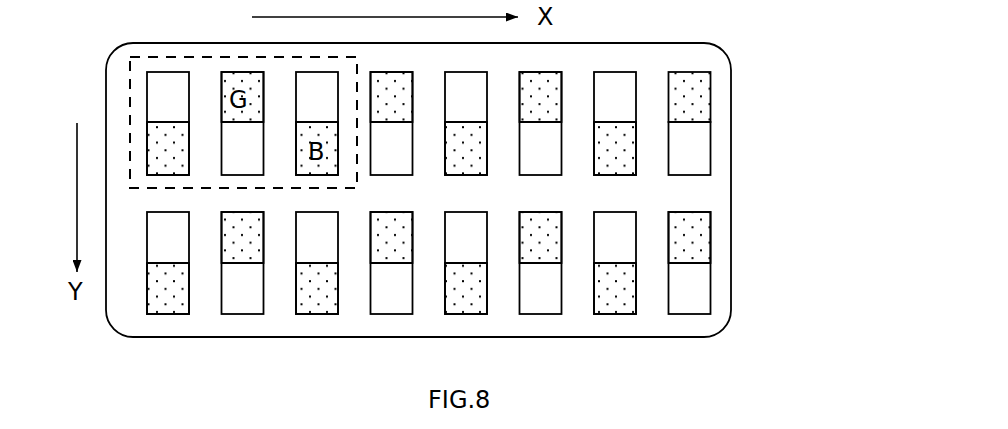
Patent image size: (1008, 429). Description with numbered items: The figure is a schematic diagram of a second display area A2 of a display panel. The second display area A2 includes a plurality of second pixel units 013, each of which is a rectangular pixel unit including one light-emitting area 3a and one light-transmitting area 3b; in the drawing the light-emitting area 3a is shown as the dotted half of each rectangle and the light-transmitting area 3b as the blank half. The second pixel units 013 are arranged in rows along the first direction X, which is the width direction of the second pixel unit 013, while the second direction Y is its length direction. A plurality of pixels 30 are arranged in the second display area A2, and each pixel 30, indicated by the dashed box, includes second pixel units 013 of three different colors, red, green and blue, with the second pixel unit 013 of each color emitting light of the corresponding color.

The pixel 30 is at (130, 72).
The second pixel unit 013 is at (146, 100).
The light-emitting area 3a is at (711, 98).
The light-transmitting area 3b is at (711, 148).
The second display area A2 is at (731, 213).